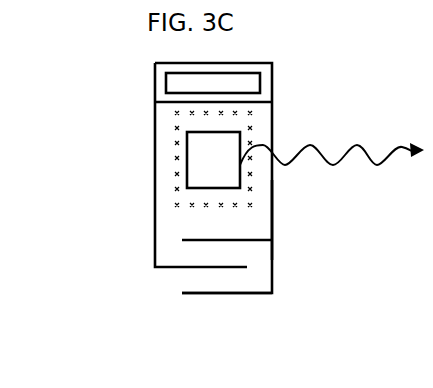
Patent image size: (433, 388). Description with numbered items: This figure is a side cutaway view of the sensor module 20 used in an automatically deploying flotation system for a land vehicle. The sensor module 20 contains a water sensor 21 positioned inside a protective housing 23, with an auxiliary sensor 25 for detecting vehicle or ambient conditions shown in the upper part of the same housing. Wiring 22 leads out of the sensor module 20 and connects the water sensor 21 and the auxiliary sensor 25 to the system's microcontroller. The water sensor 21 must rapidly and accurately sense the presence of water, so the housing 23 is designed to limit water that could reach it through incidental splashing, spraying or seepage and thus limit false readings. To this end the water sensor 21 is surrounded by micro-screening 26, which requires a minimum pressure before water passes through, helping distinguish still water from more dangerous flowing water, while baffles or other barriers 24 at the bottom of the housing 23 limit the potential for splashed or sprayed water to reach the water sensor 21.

The sensor module 20 is at (138, 211).
The water sensor 21 is at (176, 170).
The wiring 22 is at (357, 128).
The protective housing 23 is at (286, 210).
The baffles or other barriers 24 is at (215, 308).
The auxiliary sensor 25 is at (158, 84).
The micro-screening 26 is at (162, 138).